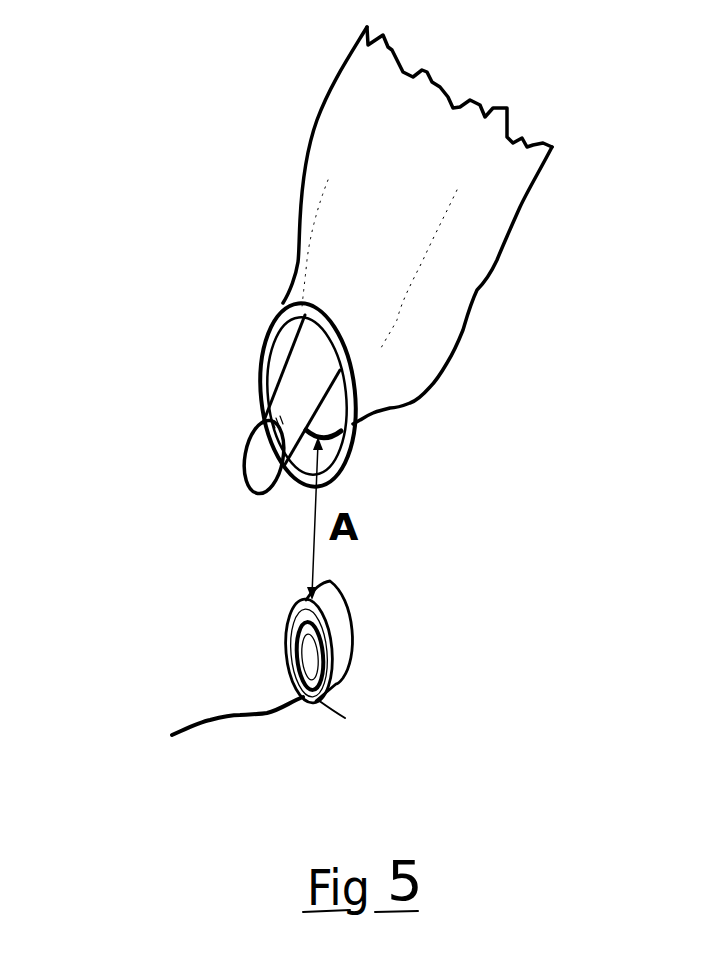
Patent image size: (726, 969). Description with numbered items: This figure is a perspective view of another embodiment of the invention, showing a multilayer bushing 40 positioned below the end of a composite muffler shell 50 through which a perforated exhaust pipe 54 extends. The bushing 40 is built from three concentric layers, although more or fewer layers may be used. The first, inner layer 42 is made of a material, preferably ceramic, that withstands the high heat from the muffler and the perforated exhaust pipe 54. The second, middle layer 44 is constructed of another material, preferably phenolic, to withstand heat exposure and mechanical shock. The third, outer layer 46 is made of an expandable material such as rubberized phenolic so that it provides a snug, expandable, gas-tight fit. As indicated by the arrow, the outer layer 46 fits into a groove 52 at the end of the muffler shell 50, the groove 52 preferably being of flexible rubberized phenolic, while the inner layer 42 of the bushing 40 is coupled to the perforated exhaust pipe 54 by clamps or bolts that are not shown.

The bushing 40 is at (289, 607).
The first, inner layer 42 is at (210, 728).
The second, middle layer 44 is at (345, 718).
The third, outer layer 46 is at (342, 650).
The muffler shell 50 is at (470, 273).
The groove 52 is at (272, 341).
The perforated exhaust pipe 54 is at (268, 406).